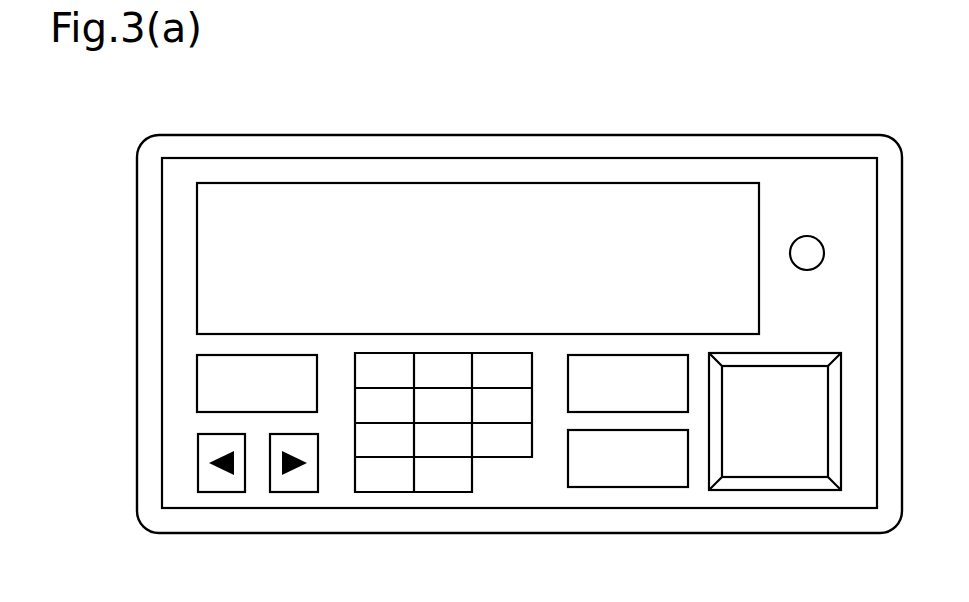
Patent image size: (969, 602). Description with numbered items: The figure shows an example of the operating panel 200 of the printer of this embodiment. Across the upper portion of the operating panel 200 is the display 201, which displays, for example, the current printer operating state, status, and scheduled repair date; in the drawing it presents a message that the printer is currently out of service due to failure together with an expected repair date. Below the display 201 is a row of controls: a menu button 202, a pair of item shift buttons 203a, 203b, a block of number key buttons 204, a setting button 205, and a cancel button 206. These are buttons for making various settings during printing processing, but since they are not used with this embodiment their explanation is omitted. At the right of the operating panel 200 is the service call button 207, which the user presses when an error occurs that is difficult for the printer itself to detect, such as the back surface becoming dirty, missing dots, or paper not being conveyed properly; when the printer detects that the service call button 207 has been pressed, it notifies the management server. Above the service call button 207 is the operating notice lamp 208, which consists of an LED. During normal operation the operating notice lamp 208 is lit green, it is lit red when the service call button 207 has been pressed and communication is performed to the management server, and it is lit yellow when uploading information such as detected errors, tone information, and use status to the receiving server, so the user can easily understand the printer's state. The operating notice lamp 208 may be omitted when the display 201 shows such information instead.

The operating panel 200 is at (518, 135).
The display 201 is at (230, 182).
The menu button 202 is at (197, 380).
The item shift button 203a is at (217, 492).
The item shift button 203b is at (293, 492).
The number key buttons 204 is at (440, 492).
The setting button 205 is at (568, 392).
The cancel button 206 is at (622, 487).
The service call button 207 is at (768, 490).
The operating notice lamp 208 is at (807, 236).